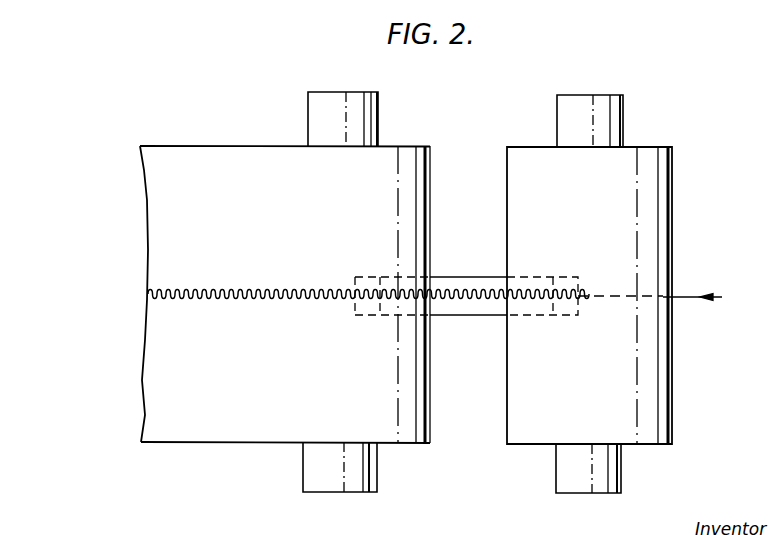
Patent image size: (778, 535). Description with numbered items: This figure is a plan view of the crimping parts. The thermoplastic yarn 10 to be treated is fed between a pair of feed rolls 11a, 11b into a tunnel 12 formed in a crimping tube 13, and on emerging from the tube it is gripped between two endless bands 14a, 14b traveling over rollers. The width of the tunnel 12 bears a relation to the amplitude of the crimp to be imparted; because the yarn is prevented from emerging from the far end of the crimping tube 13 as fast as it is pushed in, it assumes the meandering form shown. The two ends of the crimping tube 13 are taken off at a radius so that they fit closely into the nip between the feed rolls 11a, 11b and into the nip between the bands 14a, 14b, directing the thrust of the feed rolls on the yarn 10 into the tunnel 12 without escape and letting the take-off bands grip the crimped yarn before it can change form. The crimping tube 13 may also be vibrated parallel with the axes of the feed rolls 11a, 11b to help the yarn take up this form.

The thermoplastic yarn 10 is at (686, 293).
The feed roll 11a is at (632, 170).
The feed roll 11b is at (695, 138).
The tunnel 12 is at (472, 305).
The crimping tube 13 is at (456, 276).
The endless band 14a is at (402, 152).
The endless band 14b is at (470, 138).